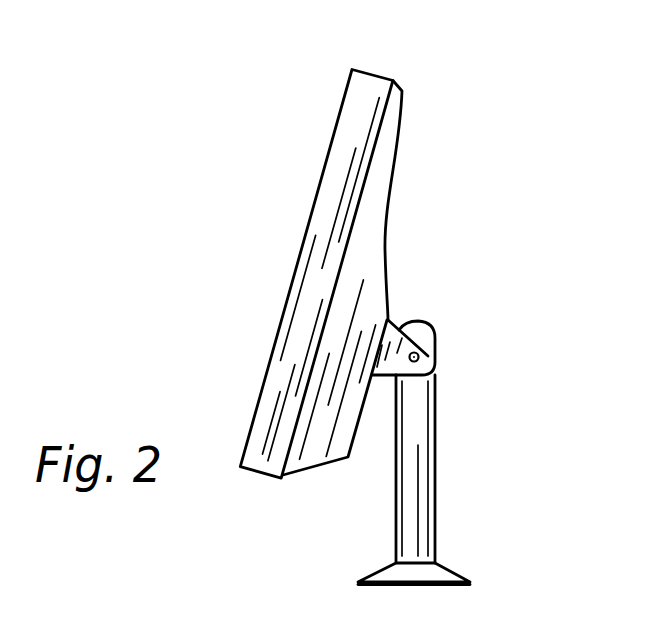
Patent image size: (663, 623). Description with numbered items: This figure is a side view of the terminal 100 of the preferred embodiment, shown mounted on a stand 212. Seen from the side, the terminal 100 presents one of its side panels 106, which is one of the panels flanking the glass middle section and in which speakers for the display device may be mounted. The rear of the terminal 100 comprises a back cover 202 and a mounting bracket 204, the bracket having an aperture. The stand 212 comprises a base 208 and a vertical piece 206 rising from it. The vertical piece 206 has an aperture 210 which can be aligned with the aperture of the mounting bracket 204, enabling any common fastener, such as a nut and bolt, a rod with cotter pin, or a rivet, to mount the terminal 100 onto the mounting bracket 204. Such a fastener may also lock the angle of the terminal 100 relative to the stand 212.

The terminal 100 is at (231, 218).
The side panel 106 is at (365, 76).
The back cover 202 is at (387, 238).
The mounting bracket 204 is at (391, 321).
The aperture 210 is at (430, 358).
The vertical piece 206 is at (435, 445).
The base 208 is at (373, 573).
The stand 212 is at (458, 495).